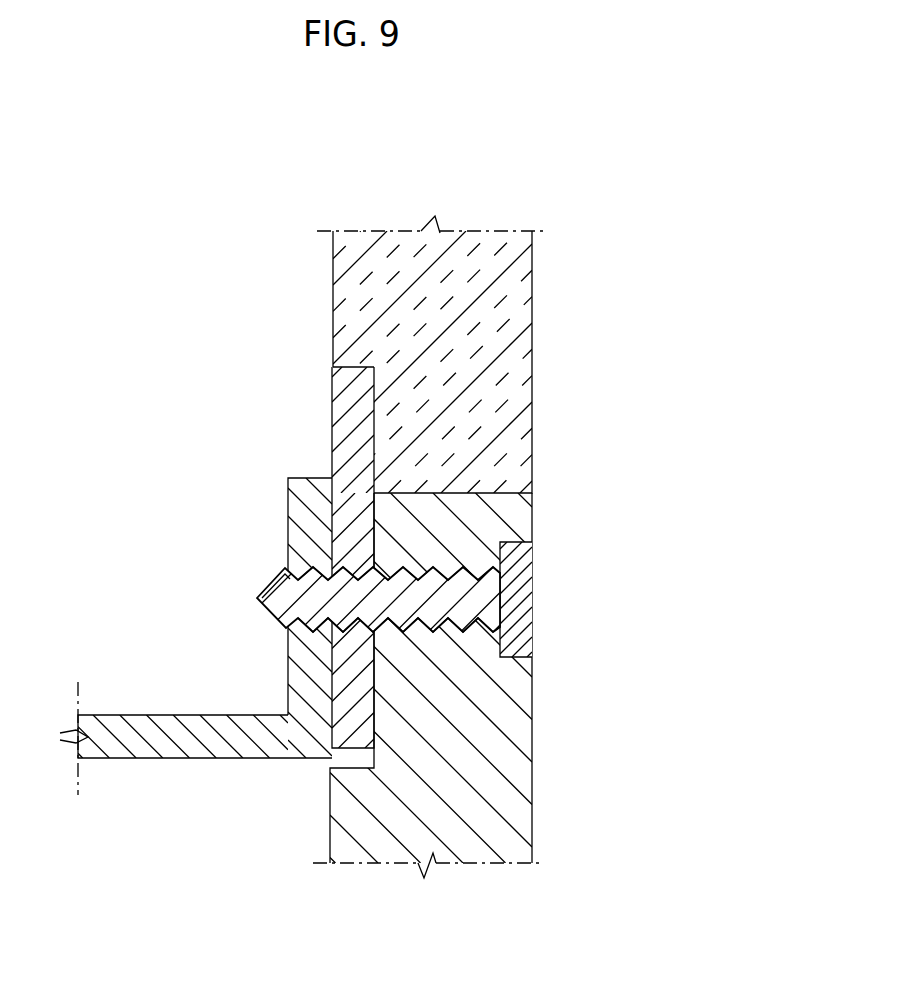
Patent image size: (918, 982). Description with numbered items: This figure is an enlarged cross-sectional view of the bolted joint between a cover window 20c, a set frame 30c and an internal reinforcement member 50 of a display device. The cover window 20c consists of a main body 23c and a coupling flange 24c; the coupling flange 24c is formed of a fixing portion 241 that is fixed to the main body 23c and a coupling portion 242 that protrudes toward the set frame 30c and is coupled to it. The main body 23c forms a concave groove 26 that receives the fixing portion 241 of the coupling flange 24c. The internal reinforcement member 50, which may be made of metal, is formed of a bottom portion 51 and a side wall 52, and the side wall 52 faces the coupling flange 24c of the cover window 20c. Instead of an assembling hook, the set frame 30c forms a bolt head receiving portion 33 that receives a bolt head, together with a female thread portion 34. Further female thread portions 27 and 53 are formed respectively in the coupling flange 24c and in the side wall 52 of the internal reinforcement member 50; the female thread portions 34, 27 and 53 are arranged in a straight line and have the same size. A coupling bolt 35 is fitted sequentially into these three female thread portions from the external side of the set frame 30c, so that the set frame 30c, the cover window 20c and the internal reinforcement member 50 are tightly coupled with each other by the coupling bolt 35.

The cover window 20c is at (160, 315).
The main body 23c is at (348, 324).
The coupling flange 24c is at (215, 415).
The fixing portion 241 is at (345, 422).
The coupling portion 242 is at (338, 524).
The concave groove 26 is at (378, 405).
The female thread portion 27 is at (338, 578).
The set frame 30c is at (526, 776).
The bolt head receiving portion 33 is at (524, 550).
The female thread portion 34 is at (465, 590).
The coupling bolt 35 is at (542, 618).
The internal reinforcement member 50 is at (158, 710).
The bottom portion 51 is at (173, 752).
The side wall 52 is at (297, 548).
The female thread portion 53 is at (307, 612).